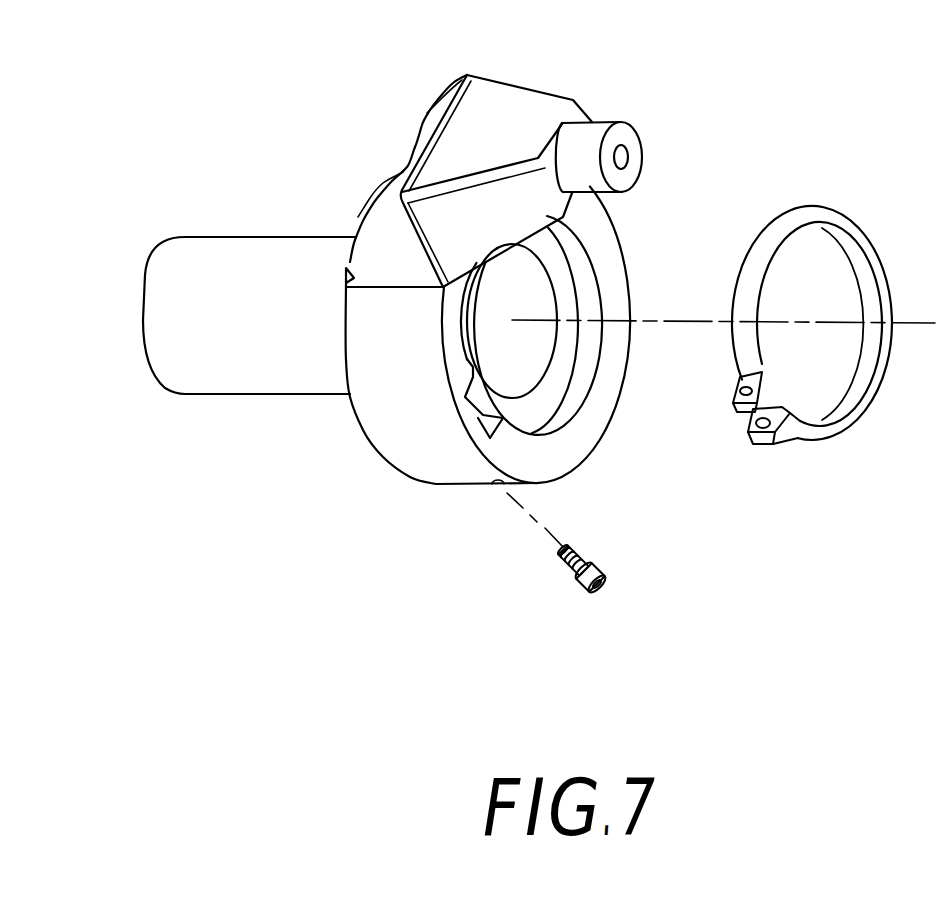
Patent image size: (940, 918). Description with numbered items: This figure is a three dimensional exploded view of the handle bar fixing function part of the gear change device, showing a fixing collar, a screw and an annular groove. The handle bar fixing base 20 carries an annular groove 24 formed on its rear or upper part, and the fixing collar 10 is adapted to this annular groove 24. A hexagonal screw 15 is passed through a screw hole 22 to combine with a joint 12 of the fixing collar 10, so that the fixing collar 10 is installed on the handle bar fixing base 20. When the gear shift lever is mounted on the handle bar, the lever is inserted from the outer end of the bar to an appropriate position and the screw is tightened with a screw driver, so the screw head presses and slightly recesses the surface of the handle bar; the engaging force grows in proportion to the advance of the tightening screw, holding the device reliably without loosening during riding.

The fixing collar 10 is at (782, 215).
The joint 12 is at (758, 438).
The hexagonal screw 15 is at (573, 580).
The handle bar fixing base 20 is at (230, 243).
The screw hole 22 is at (500, 486).
The annular groove 24 is at (493, 423).